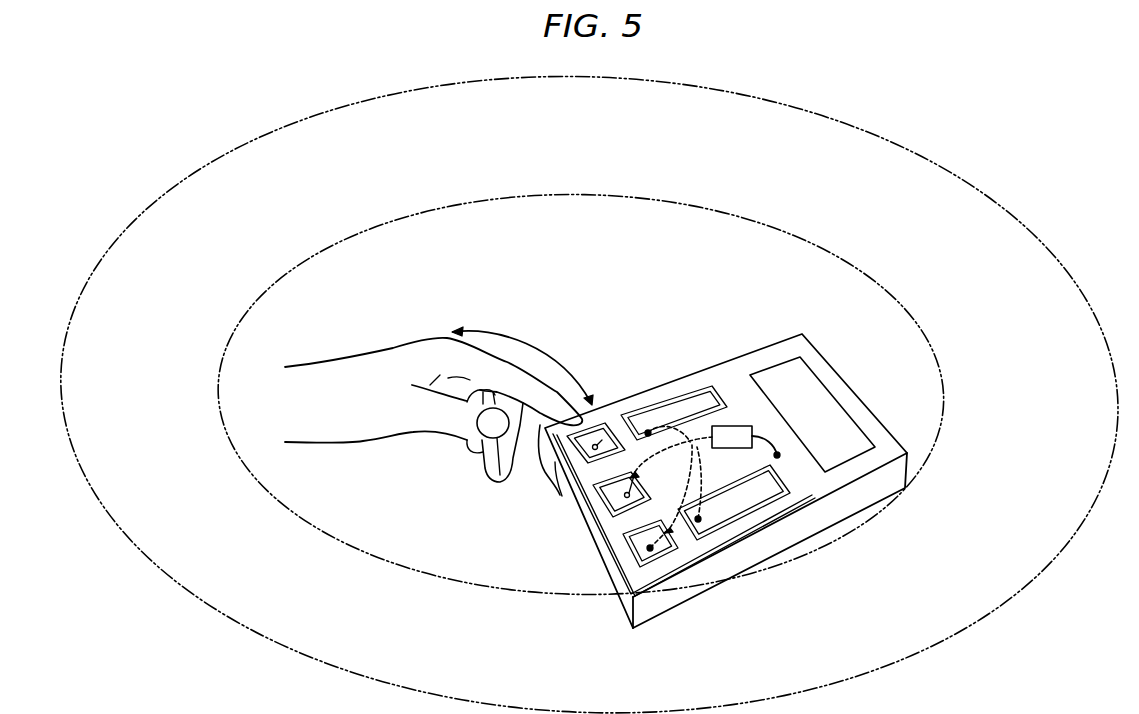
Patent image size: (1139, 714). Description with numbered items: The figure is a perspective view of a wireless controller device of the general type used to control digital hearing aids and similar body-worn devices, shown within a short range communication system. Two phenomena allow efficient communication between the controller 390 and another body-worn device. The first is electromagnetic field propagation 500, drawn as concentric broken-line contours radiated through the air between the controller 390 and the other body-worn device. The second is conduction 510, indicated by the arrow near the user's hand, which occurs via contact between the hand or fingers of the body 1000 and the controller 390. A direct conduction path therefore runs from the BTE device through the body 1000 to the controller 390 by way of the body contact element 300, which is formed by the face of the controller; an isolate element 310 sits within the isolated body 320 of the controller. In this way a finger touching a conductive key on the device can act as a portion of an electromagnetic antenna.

The electromagnetic field propagation 500 is at (874, 180).
The body 1000 is at (437, 418).
The conduction 510 is at (560, 365).
The controller 390 is at (728, 427).
The body contact element 300 is at (642, 543).
The isolate element 310 is at (802, 490).
The isolated body 320 is at (556, 470).